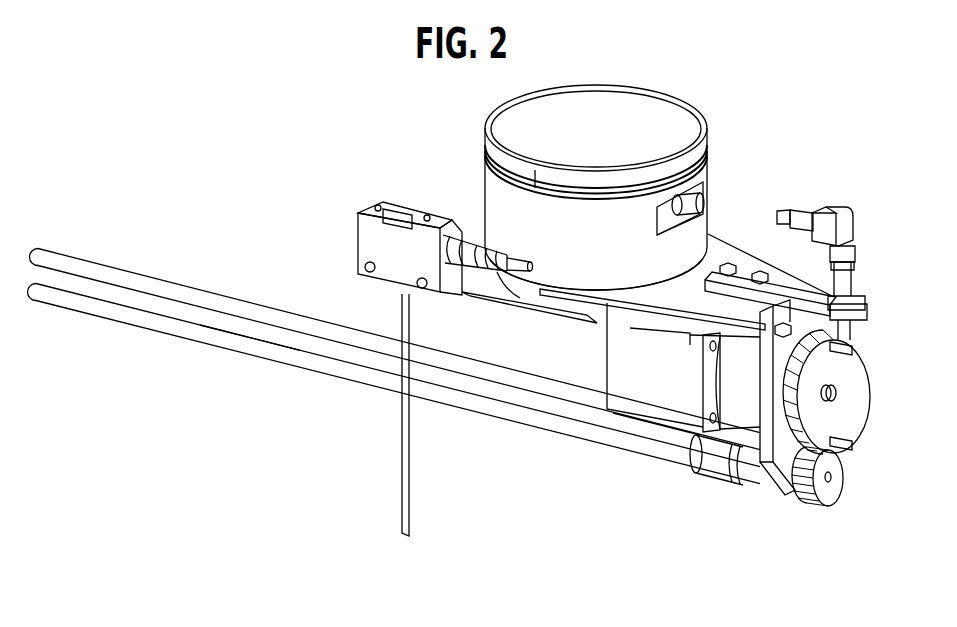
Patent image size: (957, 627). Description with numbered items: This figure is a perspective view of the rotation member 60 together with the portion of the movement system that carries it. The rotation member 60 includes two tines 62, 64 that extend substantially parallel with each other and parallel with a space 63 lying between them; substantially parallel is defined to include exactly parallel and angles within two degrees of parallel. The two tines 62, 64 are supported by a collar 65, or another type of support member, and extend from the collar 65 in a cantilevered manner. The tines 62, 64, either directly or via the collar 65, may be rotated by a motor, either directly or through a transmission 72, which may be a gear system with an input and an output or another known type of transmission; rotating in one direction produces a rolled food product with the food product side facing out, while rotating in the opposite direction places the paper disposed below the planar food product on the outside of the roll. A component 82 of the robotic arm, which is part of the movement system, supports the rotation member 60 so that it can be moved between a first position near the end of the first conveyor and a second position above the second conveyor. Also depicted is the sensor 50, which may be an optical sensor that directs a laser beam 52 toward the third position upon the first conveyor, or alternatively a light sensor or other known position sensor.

The movement member 82 is at (718, 153).
The sensor 50 is at (407, 212).
The laser beam 52 is at (402, 463).
The tine 64 is at (137, 277).
The tine 62 is at (172, 327).
The space 63 is at (242, 327).
The rotation member 60 is at (688, 478).
The collar 65 is at (710, 460).
The transmission 72 is at (853, 410).